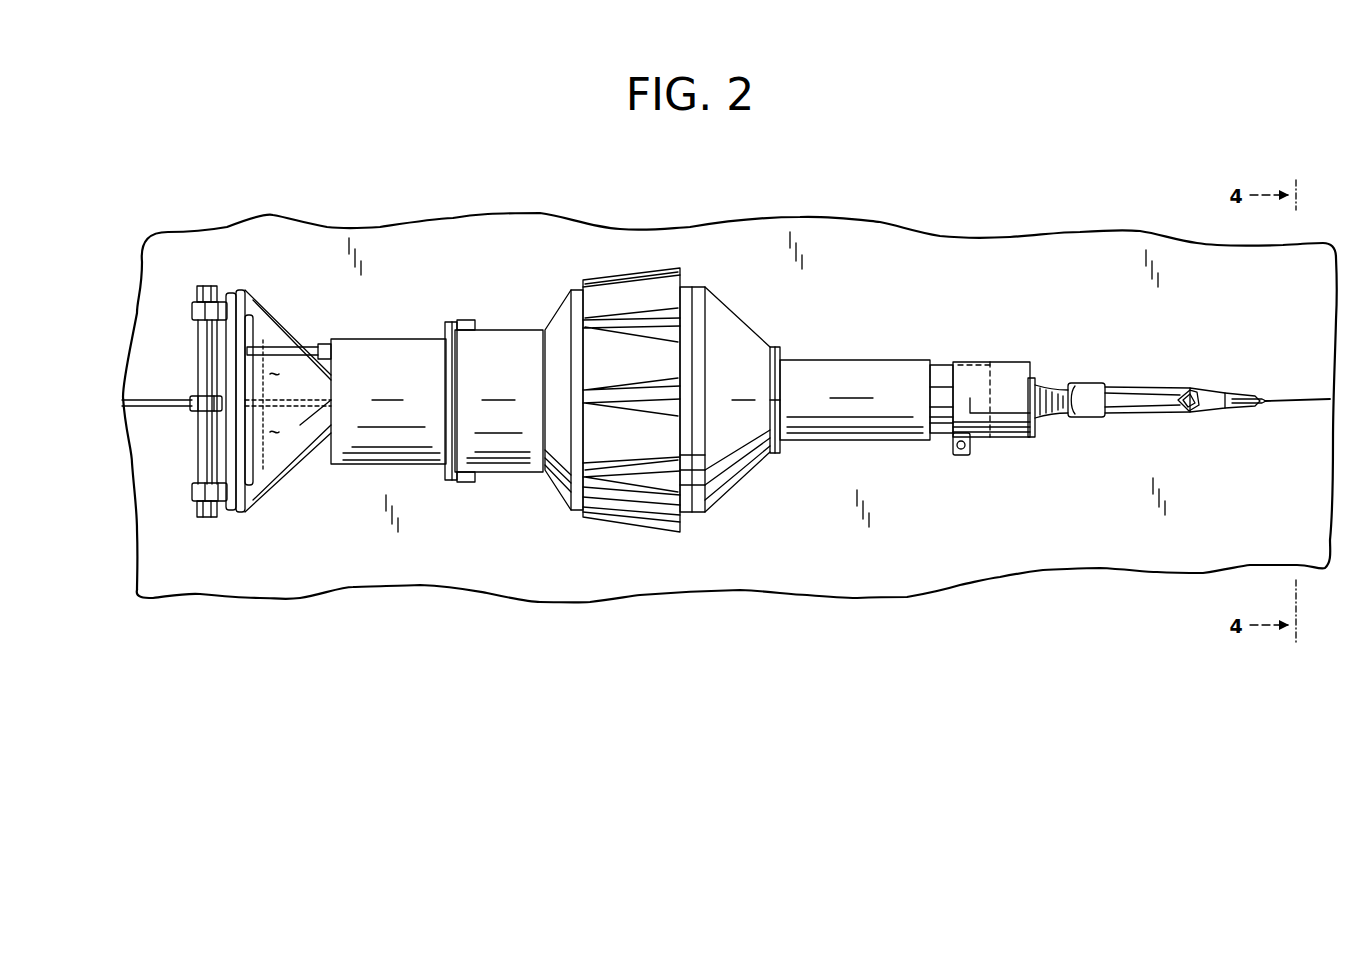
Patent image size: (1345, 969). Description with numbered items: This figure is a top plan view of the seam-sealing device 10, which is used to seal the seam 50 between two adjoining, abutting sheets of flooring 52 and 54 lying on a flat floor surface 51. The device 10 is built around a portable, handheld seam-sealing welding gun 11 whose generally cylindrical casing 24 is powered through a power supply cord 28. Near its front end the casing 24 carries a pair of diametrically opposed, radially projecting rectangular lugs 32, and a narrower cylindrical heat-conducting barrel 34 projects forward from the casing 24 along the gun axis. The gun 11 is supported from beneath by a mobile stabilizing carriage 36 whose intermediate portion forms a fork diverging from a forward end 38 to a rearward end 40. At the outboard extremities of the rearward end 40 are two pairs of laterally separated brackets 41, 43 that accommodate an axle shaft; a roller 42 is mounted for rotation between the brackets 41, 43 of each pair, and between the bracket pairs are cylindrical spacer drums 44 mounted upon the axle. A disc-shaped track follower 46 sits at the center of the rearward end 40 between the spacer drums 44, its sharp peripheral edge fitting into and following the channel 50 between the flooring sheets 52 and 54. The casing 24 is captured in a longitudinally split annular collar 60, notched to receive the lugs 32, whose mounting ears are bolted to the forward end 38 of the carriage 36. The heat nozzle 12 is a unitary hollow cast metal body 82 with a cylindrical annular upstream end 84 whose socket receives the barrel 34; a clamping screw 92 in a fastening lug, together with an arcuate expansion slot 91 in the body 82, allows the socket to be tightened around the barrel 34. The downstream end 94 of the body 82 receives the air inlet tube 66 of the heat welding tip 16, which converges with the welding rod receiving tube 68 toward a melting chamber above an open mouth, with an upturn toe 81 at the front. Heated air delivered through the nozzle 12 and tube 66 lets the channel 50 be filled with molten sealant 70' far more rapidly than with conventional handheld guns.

The seam-sealing device 10 is at (856, 310).
The seam-sealing welding gun 11 is at (737, 305).
The heat nozzle 12 is at (987, 350).
The heat welding tip 16 is at (1200, 385).
The casing 24 is at (390, 370).
The power supply cord 28 is at (307, 345).
The lugs 32 is at (455, 322).
The heat-conducting barrel 34 is at (943, 422).
The stabilizing carriage 36 is at (290, 505).
The forward end 38 is at (302, 452).
The rearward end 40 is at (246, 298).
The brackets 41 is at (229, 292).
The roller 42 is at (192, 310).
The brackets 43 is at (195, 325).
The spacer drums 44 is at (200, 358).
The track follower 46 is at (190, 410).
The seam 50 is at (150, 404).
The floor surface 51 is at (912, 572).
The sheet of flooring 52 is at (383, 248).
The sheet of flooring 54 is at (360, 573).
The collar 60 is at (496, 340).
The air inlet tube 66 is at (1115, 414).
The welding rod receiving tube 68 is at (1200, 394).
The molten sealant 70' is at (1297, 436).
The upturn toe 81 is at (1265, 410).
The metal body 82 is at (1028, 366).
The upstream end 84 is at (968, 375).
The arcuate expansion slot 91 is at (971, 412).
The clamping screw 92 is at (963, 455).
The downstream end 94 is at (1072, 384).